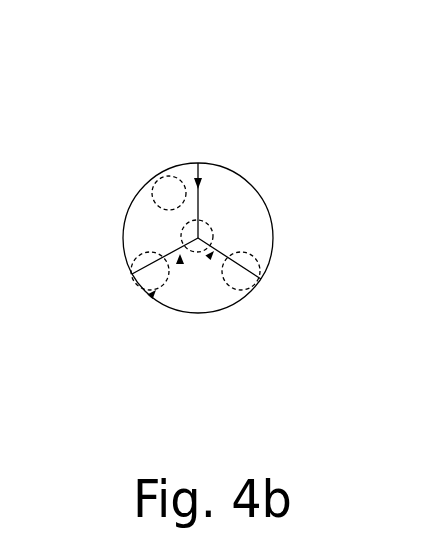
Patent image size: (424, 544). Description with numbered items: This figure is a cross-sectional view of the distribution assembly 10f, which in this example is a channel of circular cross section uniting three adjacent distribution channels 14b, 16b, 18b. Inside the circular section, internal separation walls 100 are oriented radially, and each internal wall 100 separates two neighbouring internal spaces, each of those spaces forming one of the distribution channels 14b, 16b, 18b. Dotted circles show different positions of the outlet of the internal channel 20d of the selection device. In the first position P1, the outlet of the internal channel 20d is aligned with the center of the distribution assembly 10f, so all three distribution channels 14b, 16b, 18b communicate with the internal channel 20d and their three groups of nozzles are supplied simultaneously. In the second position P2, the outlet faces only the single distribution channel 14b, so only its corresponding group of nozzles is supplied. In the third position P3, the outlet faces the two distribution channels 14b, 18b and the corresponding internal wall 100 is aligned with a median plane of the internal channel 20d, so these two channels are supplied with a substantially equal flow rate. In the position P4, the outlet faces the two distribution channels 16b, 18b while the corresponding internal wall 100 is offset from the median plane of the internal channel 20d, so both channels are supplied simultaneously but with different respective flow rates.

The distribution assembly 10f is at (302, 242).
The distribution channel 14b is at (145, 228).
The distribution channel 16b is at (218, 193).
The distribution channel 18b is at (195, 290).
The internal channel 20d is at (153, 294).
The internal separation wall 100 is at (200, 178).
The first position P1 is at (215, 228).
The second position P2 is at (169, 193).
The third position P3 is at (132, 272).
The fourth position P4 is at (243, 272).